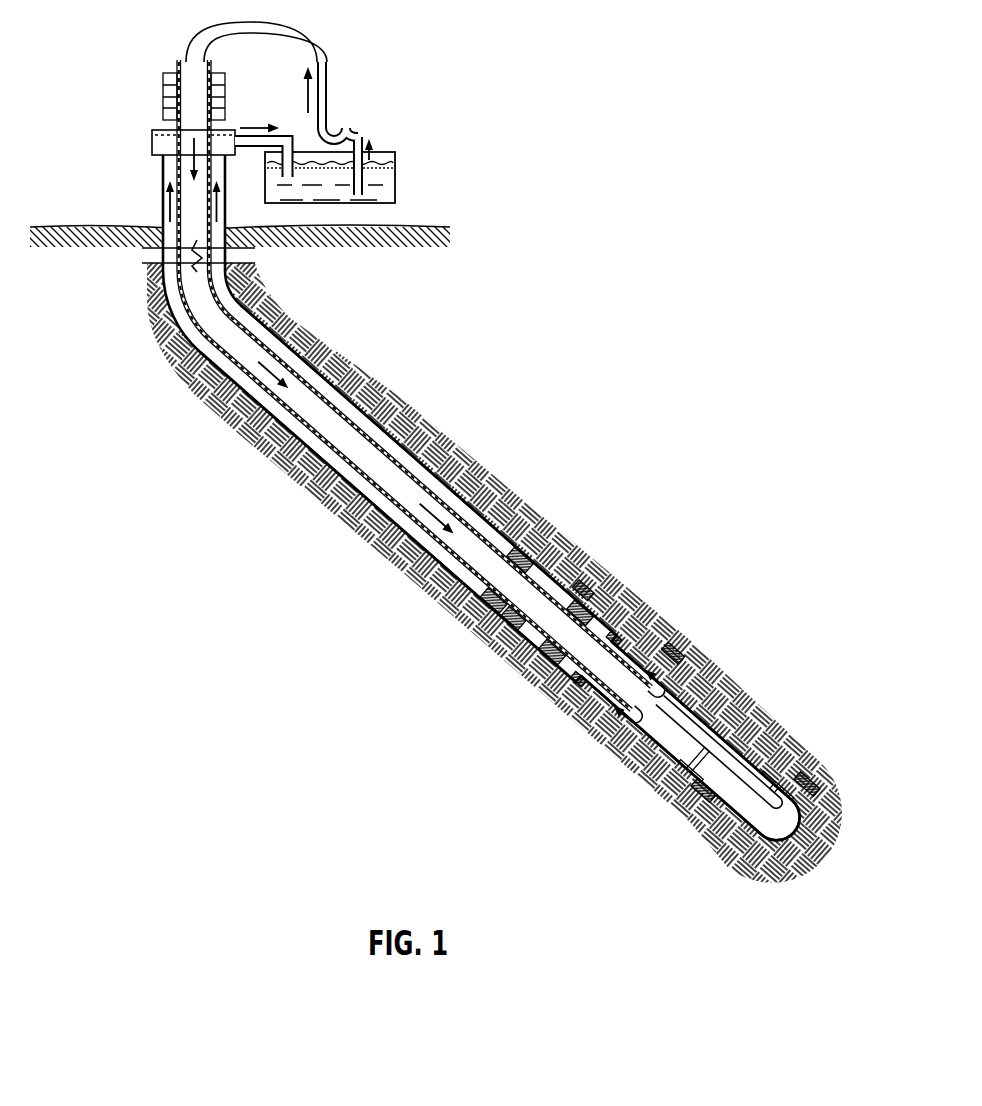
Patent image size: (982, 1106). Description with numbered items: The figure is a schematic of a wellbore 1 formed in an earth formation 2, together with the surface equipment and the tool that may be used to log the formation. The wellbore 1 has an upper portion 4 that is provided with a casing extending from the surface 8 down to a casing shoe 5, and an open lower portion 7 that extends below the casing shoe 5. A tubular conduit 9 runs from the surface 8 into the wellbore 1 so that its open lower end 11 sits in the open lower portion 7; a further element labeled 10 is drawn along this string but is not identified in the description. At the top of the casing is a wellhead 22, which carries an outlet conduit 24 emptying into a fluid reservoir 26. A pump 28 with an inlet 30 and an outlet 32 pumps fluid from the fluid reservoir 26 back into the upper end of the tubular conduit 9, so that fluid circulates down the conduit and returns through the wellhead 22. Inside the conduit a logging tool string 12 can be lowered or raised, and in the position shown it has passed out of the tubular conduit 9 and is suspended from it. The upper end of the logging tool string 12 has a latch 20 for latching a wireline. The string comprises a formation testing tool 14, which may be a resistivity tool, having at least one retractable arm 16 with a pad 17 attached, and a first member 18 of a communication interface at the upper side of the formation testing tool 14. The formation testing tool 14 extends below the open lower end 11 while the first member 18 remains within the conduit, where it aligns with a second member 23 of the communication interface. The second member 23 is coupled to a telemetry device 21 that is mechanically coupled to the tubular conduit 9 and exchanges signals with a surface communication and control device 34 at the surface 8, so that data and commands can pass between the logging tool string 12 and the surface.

The wellbore 1 is at (524, 547).
The earth formation 2 is at (618, 556).
The upper portion 4 is at (170, 333).
The casing shoe 5 is at (257, 312).
The open lower portion 7 is at (580, 590).
The surface 8 is at (77, 227).
The tubular conduit 9 is at (350, 414).
The tubing string 10 is at (372, 452).
The open lower end 11 is at (672, 652).
The logging tool string 12 is at (700, 720).
The formation testing tool 14 is at (737, 757).
The retractable arm 16 is at (693, 762).
The pad 17 is at (695, 800).
The first member of communication interface 18 is at (600, 587).
The latch 20 is at (514, 612).
The telemetry device 21 is at (500, 590).
The wellhead 22 is at (141, 183).
The second member of communication interface 23 is at (556, 640).
The outlet conduit 24 is at (290, 147).
The fluid reservoir 26 is at (396, 183).
The pump 28 is at (338, 122).
The inlet 30 is at (356, 132).
The outlet 32 is at (318, 43).
The surface communication and control device 34 is at (163, 90).